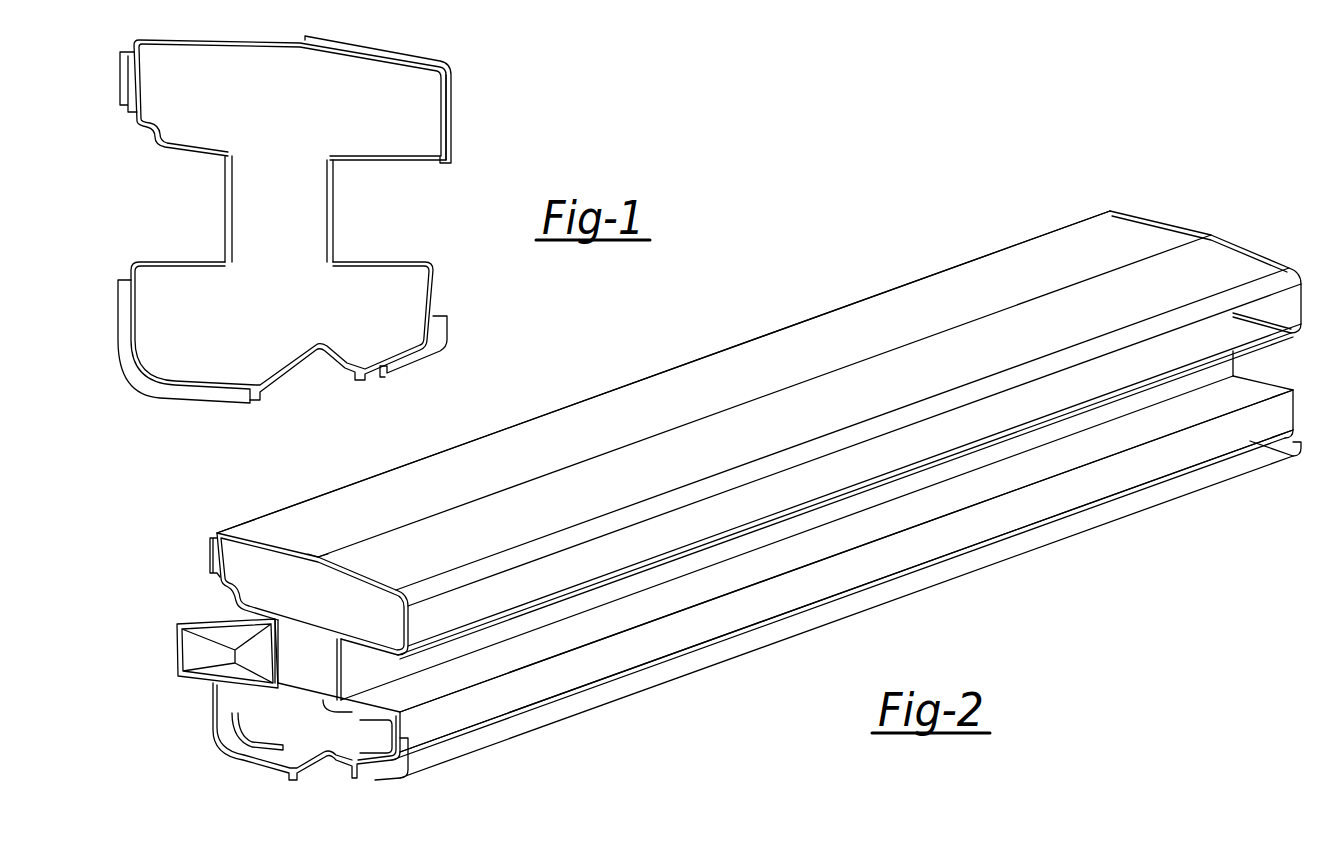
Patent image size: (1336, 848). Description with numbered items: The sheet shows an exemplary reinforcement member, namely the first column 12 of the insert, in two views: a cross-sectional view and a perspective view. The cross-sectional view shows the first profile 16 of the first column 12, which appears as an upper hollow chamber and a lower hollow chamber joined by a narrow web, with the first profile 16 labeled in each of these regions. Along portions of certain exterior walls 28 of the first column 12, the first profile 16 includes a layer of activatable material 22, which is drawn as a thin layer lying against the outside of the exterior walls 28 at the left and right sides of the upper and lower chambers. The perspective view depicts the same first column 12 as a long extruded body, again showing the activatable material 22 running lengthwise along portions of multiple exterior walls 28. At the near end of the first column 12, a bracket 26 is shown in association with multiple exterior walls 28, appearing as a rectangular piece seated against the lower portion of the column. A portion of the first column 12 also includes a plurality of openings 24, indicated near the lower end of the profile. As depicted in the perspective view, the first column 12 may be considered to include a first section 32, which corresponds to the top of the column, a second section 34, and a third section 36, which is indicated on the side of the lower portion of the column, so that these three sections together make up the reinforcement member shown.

In FIG. 1, the first column 12 is at (395, 225).
In FIG. 2, the first column 12 is at (898, 380).
In FIG. 1, the first profile 16 is at (282, 112).
In FIG. 1, the activatable material 22 is at (118, 62).
In FIG. 2, the activatable material 22 is at (722, 527).
In FIG. 2, the openings 24 is at (236, 750).
In FIG. 2, the bracket 26 is at (177, 640).
In FIG. 1, the exterior walls 28 is at (137, 83).
In FIG. 2, the exterior walls 28 is at (368, 785).
In FIG. 2, the first section 32 is at (724, 372).
In FIG. 2, the second section 34 is at (310, 663).
In FIG. 2, the third section 36 is at (860, 567).